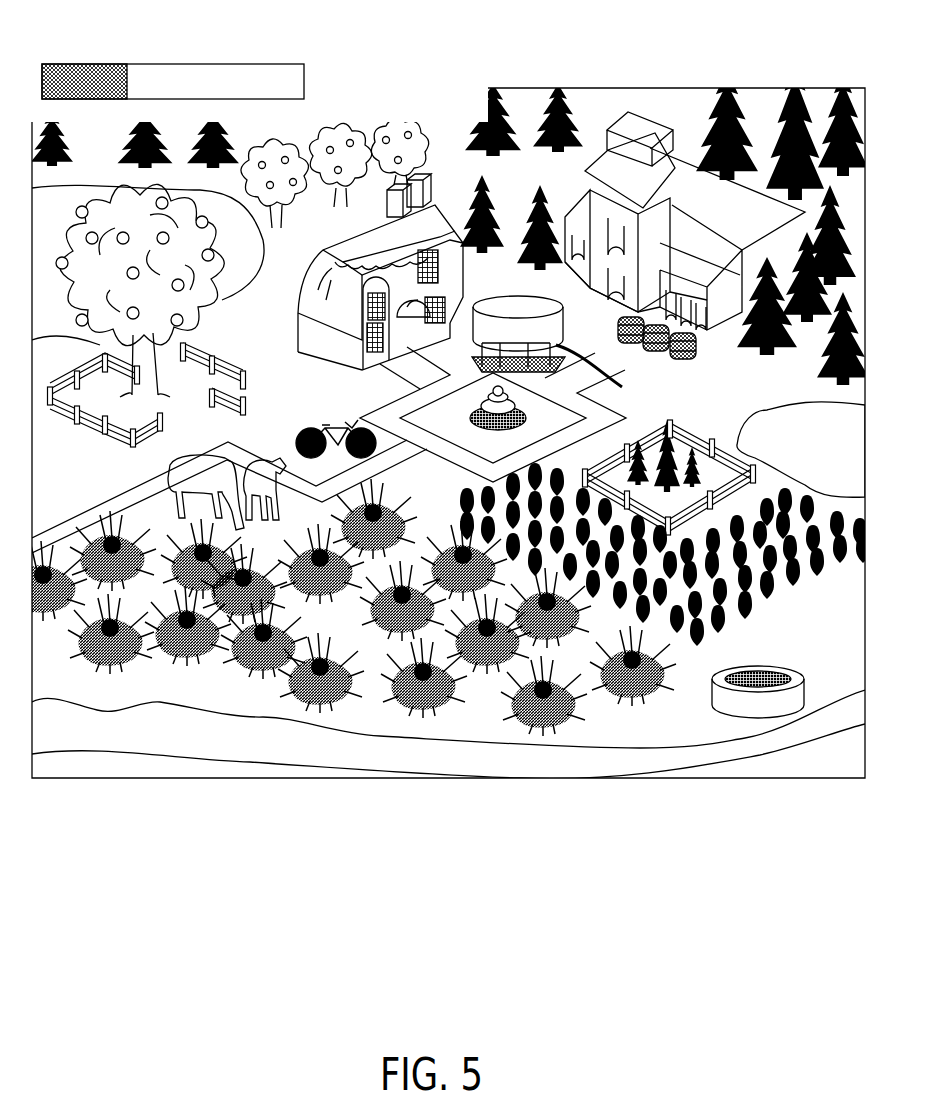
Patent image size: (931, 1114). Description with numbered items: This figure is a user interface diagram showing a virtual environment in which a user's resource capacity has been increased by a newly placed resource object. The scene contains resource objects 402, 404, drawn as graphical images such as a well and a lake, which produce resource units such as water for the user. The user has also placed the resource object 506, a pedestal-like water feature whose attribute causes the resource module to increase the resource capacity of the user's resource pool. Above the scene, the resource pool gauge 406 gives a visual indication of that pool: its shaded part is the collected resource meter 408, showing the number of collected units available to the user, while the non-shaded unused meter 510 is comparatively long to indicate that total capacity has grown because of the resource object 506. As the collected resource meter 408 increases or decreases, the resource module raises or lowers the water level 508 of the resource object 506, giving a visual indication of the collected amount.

The resource object 402 is at (800, 672).
The resource object 404 is at (841, 450).
The resource pool gauge 406 is at (302, 27).
The collected resource meter 408 is at (52, 54).
The resource object 506 is at (607, 373).
The water level 508 is at (519, 302).
The unused meter 510 is at (173, 57).